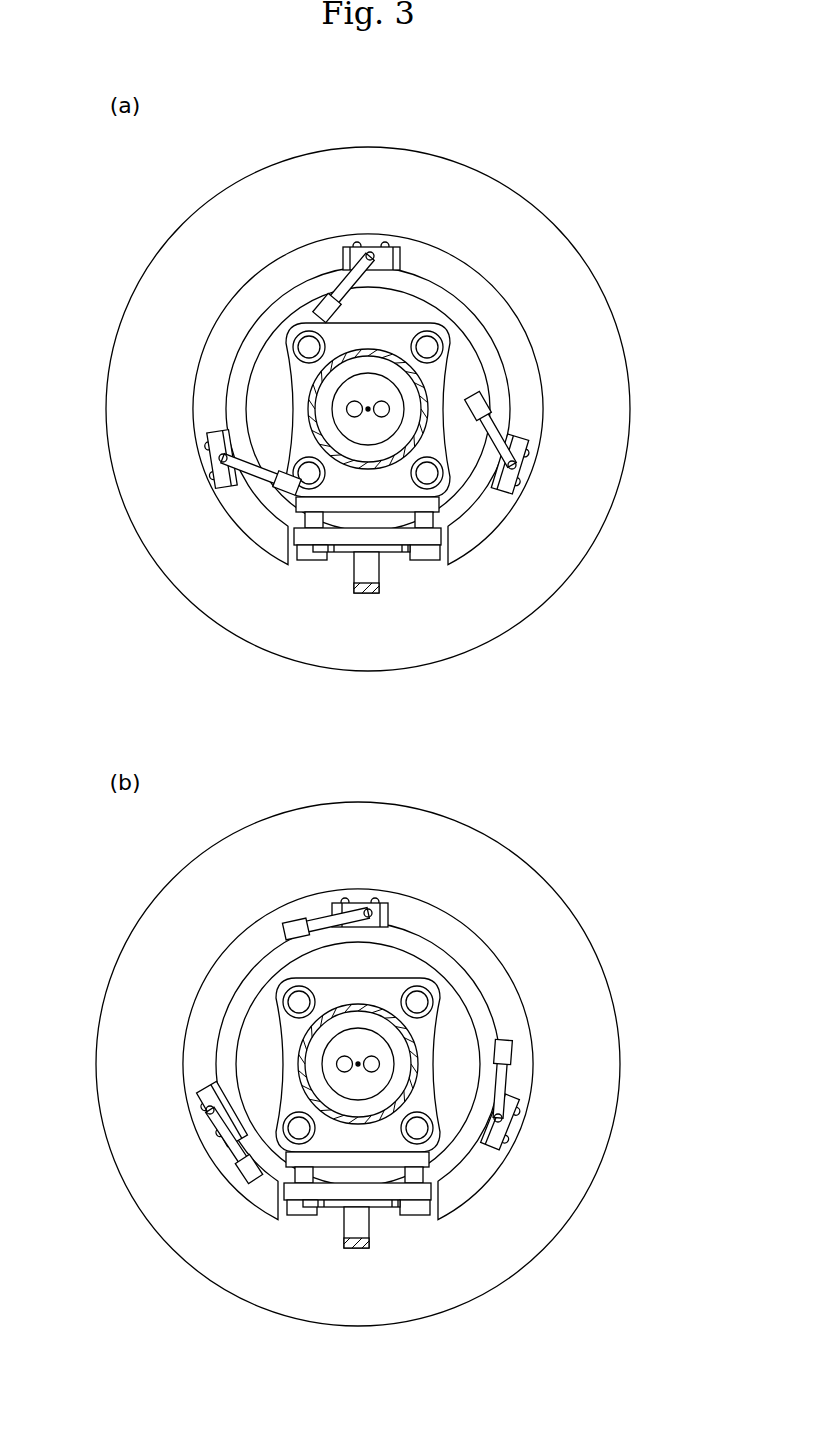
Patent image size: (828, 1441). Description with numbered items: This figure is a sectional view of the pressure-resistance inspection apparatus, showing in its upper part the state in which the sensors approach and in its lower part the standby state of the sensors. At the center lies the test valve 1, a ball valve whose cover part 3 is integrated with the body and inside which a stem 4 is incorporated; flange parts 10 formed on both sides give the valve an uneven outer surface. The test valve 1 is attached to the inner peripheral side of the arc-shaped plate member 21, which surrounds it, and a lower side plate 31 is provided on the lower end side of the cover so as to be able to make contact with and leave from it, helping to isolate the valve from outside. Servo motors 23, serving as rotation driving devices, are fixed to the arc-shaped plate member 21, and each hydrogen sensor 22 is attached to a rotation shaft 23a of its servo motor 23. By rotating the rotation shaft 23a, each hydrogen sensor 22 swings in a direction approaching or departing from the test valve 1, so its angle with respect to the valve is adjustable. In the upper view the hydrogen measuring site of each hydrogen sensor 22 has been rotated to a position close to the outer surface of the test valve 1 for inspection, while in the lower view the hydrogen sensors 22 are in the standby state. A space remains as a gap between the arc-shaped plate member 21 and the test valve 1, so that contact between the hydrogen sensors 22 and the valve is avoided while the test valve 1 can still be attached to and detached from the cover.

The test valve 1 is at (456, 383).
The cover part 3 is at (300, 387).
The stem 4 is at (364, 568).
The flange part 10 is at (404, 310).
The arc-shaped plate member 21 is at (250, 513).
The hydrogen sensor 22 is at (330, 298).
The servo motor 23 is at (383, 252).
The rotation shaft 23a is at (527, 463).
The lower side plate 31 is at (490, 612).
The rotation region R is at (465, 388).